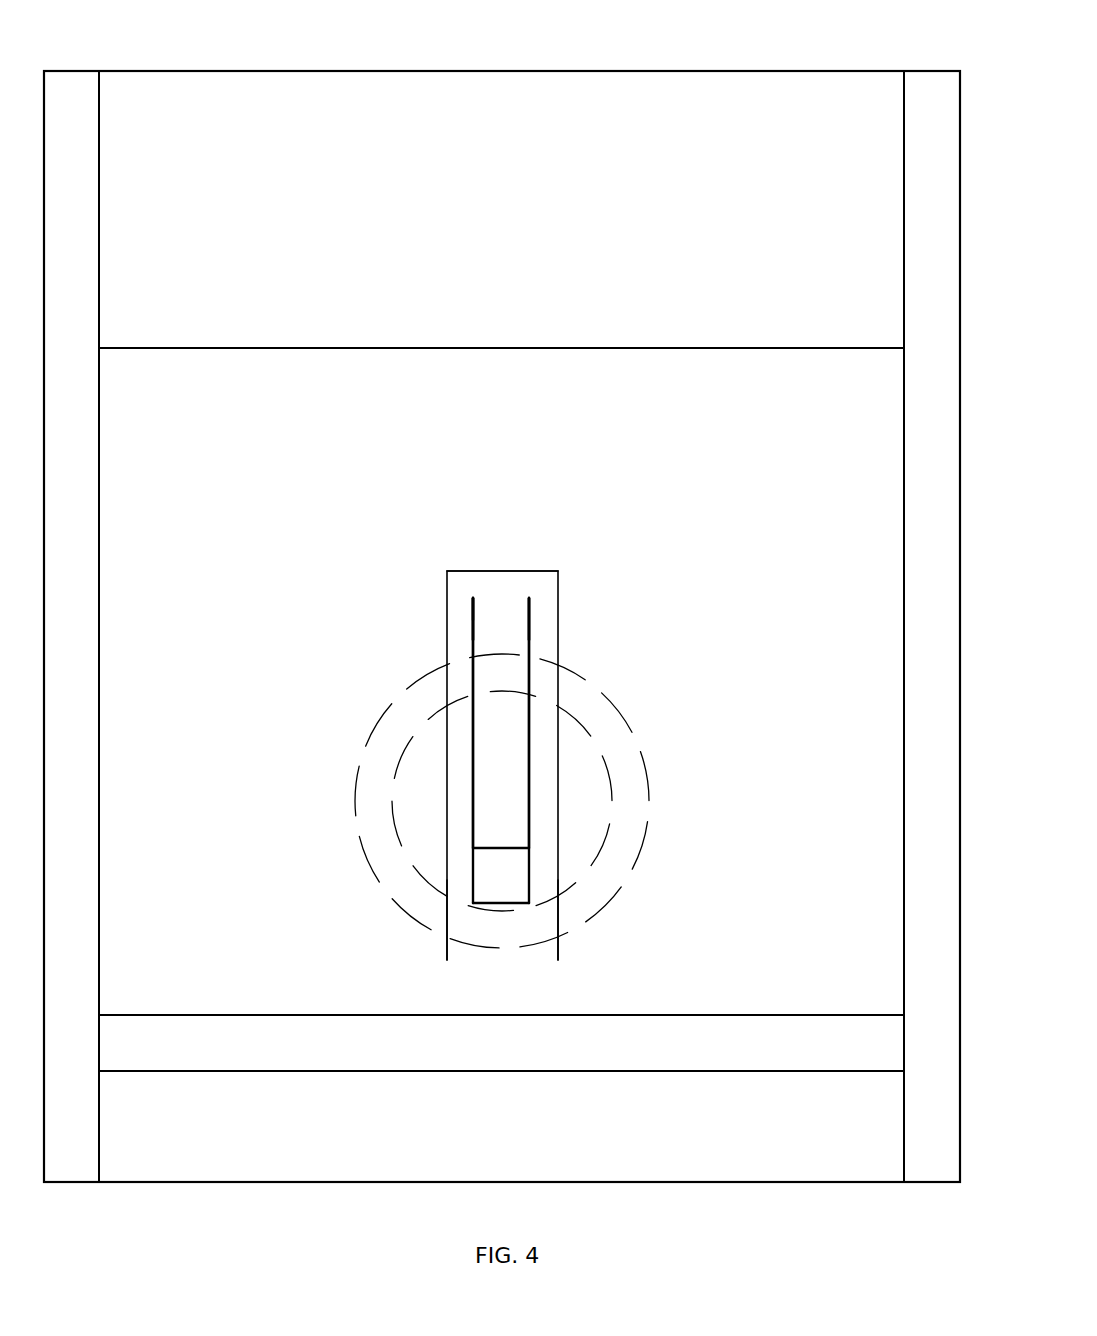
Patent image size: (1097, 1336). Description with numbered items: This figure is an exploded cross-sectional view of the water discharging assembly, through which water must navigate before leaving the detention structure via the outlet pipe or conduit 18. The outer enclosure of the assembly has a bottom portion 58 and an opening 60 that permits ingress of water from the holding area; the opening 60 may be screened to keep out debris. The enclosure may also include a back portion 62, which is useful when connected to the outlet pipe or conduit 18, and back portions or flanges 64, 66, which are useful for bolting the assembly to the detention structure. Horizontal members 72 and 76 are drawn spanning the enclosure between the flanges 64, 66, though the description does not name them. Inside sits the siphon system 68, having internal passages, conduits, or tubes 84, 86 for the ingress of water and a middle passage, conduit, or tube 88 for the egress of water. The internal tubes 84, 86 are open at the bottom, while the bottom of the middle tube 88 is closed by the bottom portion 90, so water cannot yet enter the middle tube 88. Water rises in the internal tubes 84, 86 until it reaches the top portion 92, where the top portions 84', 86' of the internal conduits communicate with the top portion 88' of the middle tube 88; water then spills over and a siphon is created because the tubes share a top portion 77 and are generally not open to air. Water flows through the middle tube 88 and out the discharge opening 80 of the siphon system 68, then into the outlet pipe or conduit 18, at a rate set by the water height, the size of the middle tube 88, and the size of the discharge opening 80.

The outlet pipe or conduit 18 is at (541, 801).
The bottom portion 58 is at (631, 1182).
The opening 60 is at (249, 1080).
The back portion 62 is at (491, 71).
The back portion or flange 64 is at (77, 87).
The back portion or flange 66 is at (941, 97).
The siphon system 68 is at (567, 534).
The upper partition 72 is at (322, 348).
The lower partition 76 is at (713, 1013).
The top portion of the siphon system 77 is at (458, 570).
The discharge opening 80 is at (517, 880).
The internal passage, conduit, or tube 84 is at (404, 750).
The top portion of internal conduit 84' is at (428, 615).
The internal passage, conduit, or tube 86 is at (584, 743).
The top portion of internal conduit 86' is at (584, 585).
The middle passage, conduit, or tube 88 is at (501, 668).
The top portion of water-discharging conduit 88' is at (514, 543).
The bottom portion 90 is at (508, 907).
The top portion of the internal conduits 92 is at (472, 597).